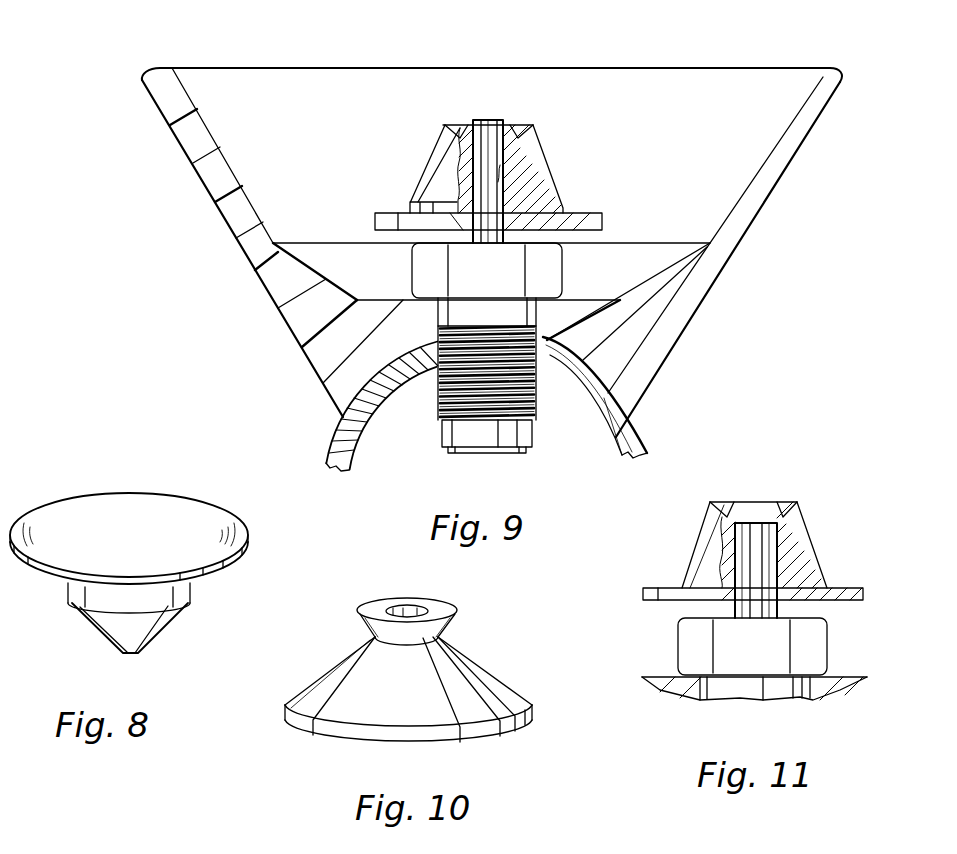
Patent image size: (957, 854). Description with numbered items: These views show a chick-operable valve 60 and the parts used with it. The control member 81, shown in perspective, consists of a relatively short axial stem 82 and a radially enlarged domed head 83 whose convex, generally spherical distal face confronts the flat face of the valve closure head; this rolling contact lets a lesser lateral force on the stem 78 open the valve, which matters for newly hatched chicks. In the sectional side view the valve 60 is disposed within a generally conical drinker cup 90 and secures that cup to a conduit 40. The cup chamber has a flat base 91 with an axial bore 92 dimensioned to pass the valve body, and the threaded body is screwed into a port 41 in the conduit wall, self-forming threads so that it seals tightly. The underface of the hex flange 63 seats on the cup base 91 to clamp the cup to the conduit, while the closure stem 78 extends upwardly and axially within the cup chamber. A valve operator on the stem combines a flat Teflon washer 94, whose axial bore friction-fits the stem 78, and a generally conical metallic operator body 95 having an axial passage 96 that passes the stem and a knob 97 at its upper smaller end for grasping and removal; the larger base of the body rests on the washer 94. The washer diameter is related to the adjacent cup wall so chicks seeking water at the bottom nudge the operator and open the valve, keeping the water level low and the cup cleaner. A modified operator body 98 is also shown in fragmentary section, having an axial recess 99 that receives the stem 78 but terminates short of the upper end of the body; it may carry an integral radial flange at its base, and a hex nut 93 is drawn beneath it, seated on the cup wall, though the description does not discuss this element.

In FIG. 9, the conduit 40 is at (648, 433).
In FIG. 9, the port 41 is at (429, 372).
In FIG. 9, the valve 60 is at (462, 452).
In FIG. 9, the hex flange 63 is at (422, 270).
In FIG. 9, the stem 78 is at (486, 122).
In FIG. 8, the control member 81 is at (198, 498).
In FIG. 8, the axial stem 82 is at (163, 613).
In FIG. 8, the head 83 is at (87, 512).
In FIG. 9, the drinker cup 90 is at (705, 30).
In FIG. 11, the drinker cup 90 is at (837, 687).
In FIG. 9, the flat base 91 is at (585, 298).
In FIG. 9, the axial bore 92 is at (540, 372).
In FIG. 11, the nut 93 is at (813, 647).
In FIG. 9, the washer 94 is at (585, 213).
In FIG. 9, the operator body 95 is at (438, 181).
In FIG. 10, the operator body 95 is at (475, 680).
In FIG. 9, the axial passage 96 is at (500, 173).
In FIG. 10, the axial passage 96 is at (410, 609).
In FIG. 9, the knob 97 is at (457, 126).
In FIG. 10, the knob 97 is at (375, 605).
In FIG. 11, the operator body 98 is at (707, 553).
In FIG. 11, the axial recess 99 is at (763, 561).